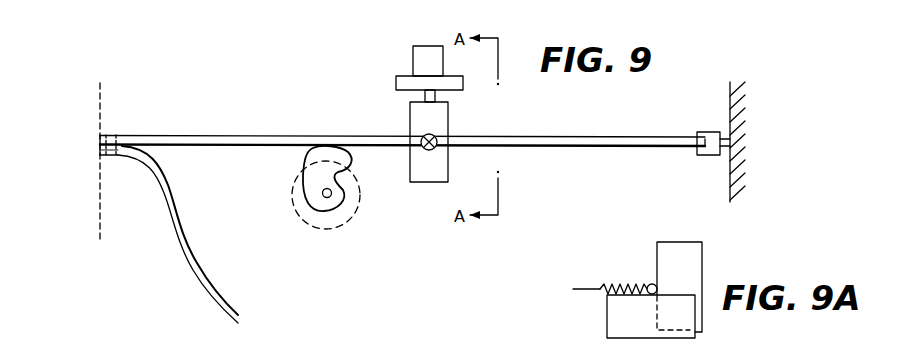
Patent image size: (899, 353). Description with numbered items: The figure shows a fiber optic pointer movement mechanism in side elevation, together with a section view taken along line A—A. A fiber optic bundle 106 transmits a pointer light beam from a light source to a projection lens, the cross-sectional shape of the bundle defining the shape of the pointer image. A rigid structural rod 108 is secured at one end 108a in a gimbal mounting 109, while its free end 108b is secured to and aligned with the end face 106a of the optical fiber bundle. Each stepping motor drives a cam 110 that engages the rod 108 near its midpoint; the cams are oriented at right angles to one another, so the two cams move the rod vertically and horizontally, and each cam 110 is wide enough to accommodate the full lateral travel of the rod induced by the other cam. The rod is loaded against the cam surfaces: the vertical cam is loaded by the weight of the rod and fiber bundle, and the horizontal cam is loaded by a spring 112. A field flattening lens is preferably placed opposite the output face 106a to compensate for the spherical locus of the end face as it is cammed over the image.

In FIG. 9, the fiber optic bundle 106 is at (195, 265).
In FIG. 9, the end face of the optical fiber bundle 106a is at (103, 160).
In FIG. 9, the rigid structural rod 108 is at (301, 134).
In FIG. 9A, the rigid structural rod 108 is at (650, 283).
In FIG. 9, the rod end 108a is at (682, 135).
In FIG. 9, the free end of the rod 108b is at (117, 134).
In FIG. 9, the gimbal mounting 109 is at (710, 157).
In FIG. 9, the cam 110 is at (450, 122).
In FIG. 9A, the cam 110 is at (702, 268).
In FIG. 9, the spring 112 is at (436, 148).
In FIG. 9A, the spring 112 is at (601, 284).